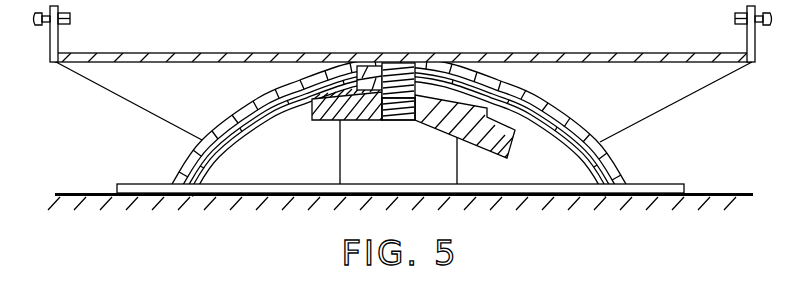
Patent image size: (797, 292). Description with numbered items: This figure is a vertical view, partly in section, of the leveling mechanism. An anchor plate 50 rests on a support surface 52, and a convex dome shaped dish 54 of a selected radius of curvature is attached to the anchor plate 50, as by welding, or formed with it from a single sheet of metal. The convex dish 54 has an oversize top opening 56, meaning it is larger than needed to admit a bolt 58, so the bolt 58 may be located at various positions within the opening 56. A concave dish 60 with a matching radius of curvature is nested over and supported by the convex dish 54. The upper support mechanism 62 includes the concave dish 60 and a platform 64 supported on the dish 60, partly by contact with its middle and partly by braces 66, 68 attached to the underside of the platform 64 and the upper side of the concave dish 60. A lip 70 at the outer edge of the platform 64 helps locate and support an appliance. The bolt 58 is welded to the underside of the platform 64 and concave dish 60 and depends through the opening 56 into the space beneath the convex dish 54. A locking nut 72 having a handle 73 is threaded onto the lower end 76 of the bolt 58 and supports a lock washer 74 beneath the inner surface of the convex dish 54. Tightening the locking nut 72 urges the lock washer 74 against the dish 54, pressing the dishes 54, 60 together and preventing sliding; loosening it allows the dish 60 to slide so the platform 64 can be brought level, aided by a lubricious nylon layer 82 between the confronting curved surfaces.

The anchor plate 50 is at (146, 184).
The support surface 52 is at (211, 233).
The convex dome shaped dish 54 is at (254, 101).
The oversize top opening 56 is at (367, 78).
The bolt 58 is at (397, 67).
The concave dish 60 is at (568, 108).
The upper support mechanism 62 is at (393, 108).
The platform 64 is at (598, 52).
The brace 66 is at (667, 107).
The brace 68 is at (133, 106).
The lip 70 is at (748, 32).
The locking nut 72 is at (327, 121).
The handle 73 is at (514, 145).
The lock washer 74 is at (290, 118).
The lower end of bolt 76 is at (398, 121).
The nylon layer 82 is at (187, 164).